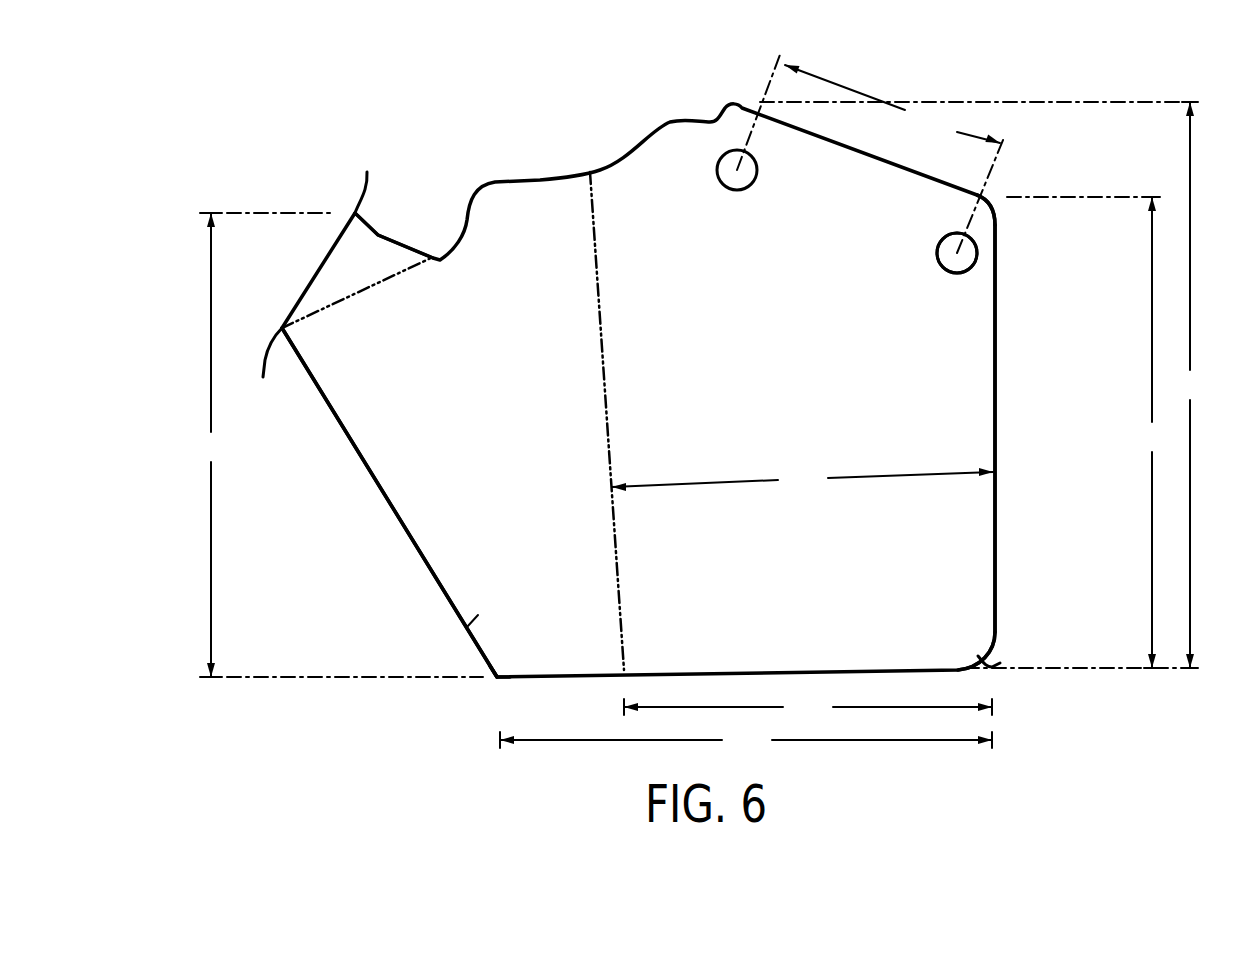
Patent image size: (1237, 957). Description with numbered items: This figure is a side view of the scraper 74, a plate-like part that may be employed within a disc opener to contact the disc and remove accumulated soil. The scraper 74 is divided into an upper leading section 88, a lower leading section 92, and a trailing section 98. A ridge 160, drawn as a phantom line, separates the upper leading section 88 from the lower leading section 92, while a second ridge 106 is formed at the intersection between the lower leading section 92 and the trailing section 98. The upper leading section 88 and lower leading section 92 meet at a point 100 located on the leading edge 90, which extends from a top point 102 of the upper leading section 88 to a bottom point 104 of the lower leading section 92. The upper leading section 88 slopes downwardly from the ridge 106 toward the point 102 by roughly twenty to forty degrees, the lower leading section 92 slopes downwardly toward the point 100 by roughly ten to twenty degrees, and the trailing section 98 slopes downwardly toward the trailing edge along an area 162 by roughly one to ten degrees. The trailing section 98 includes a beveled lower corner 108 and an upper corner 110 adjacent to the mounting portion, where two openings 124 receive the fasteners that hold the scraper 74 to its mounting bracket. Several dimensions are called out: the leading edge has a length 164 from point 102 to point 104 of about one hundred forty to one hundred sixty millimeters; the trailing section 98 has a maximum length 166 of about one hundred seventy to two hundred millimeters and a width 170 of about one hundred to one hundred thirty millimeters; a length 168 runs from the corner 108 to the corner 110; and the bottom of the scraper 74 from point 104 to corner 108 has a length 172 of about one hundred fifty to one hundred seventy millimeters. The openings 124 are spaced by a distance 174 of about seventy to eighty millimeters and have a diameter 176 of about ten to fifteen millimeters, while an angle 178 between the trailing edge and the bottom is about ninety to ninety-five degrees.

The scraper 74 is at (333, 103).
The upper leading section 88 is at (370, 244).
The leading edge 90 is at (372, 487).
The lower leading section 92 is at (467, 627).
The trailing section 98 is at (965, 528).
The point 100 is at (262, 368).
The top point 102 is at (365, 176).
The bottom point 104 is at (497, 677).
The ridge 106 is at (607, 412).
The beveled lower corner 108 is at (1000, 663).
The upper corner 110 is at (1000, 198).
The openings 124 is at (738, 192).
The ridge 160 is at (355, 292).
The area 162 is at (802, 477).
The length 164 is at (336, 445).
The maximum length 166 is at (984, 385).
The length 168 is at (1150, 432).
The width 170 is at (808, 707).
The length 172 is at (746, 740).
The distance 174 is at (892, 104).
The diameter 176 is at (960, 275).
The angle 178 is at (903, 666).